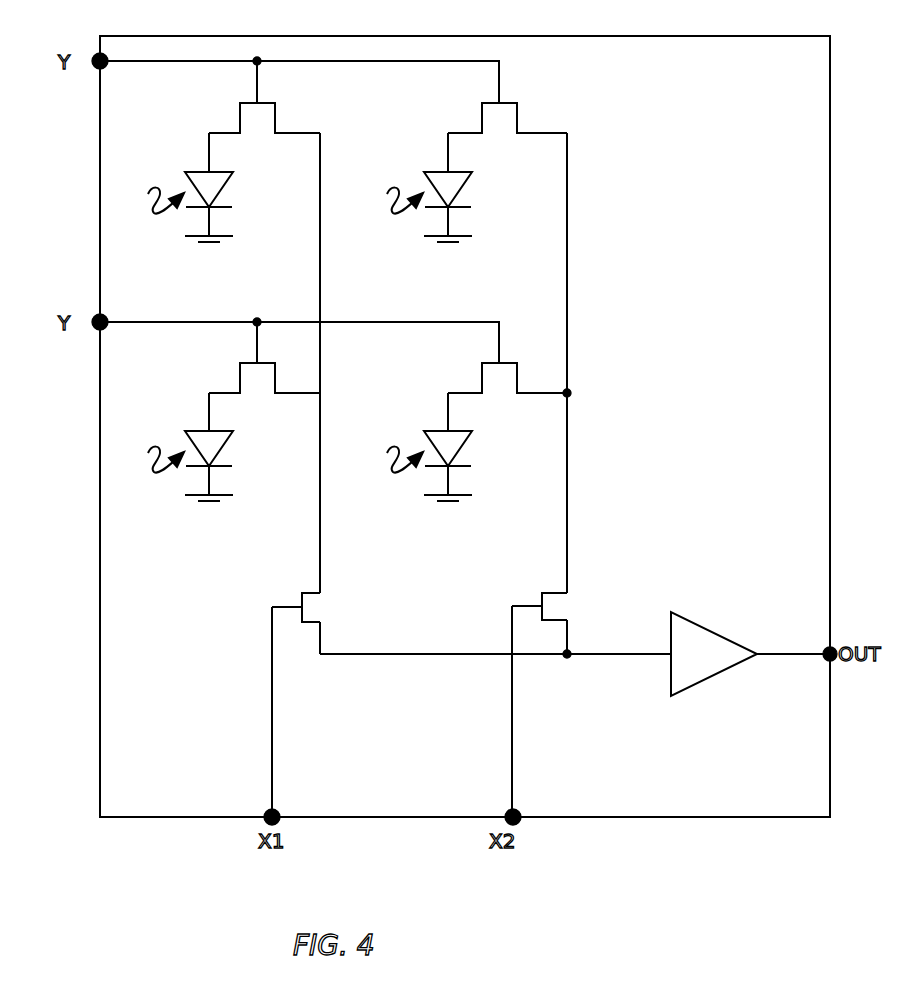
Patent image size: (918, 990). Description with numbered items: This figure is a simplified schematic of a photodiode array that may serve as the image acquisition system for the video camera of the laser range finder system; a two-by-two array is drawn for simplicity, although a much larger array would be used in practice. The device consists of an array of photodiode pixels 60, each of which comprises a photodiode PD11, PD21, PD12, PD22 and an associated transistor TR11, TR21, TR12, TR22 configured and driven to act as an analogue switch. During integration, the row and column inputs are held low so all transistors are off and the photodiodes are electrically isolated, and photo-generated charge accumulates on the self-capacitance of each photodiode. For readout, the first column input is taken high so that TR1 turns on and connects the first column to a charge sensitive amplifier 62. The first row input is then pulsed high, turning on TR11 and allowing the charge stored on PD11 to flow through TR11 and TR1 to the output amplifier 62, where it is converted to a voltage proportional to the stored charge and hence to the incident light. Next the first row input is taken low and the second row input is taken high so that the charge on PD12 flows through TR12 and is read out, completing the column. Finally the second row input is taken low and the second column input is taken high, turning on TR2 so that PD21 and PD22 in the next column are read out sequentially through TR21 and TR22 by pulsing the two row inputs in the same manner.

The photodiode pixels 60 is at (605, 138).
The charge sensitive amplifier 62 is at (712, 677).
The transistor TR11 is at (243, 327).
The transistor TR21 is at (487, 347).
The transistor TR12 is at (243, 376).
The transistor TR22 is at (491, 397).
The transistor TR1 is at (315, 705).
The transistor TR2 is at (558, 705).
The photodiode PD11 is at (220, 207).
The photodiode PD21 is at (457, 207).
The photodiode PD12 is at (220, 466).
The photodiode PD22 is at (457, 466).